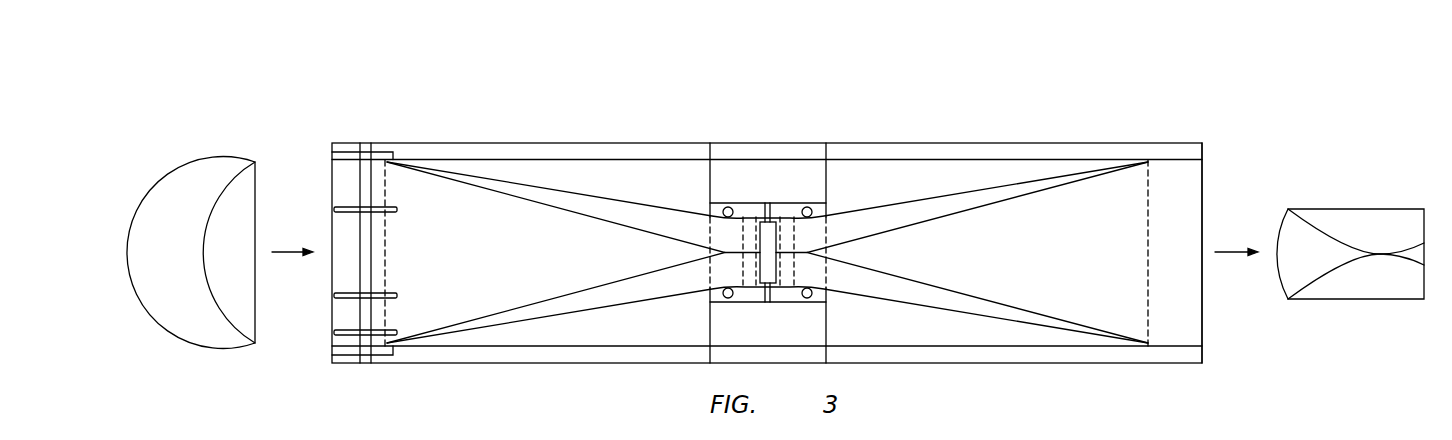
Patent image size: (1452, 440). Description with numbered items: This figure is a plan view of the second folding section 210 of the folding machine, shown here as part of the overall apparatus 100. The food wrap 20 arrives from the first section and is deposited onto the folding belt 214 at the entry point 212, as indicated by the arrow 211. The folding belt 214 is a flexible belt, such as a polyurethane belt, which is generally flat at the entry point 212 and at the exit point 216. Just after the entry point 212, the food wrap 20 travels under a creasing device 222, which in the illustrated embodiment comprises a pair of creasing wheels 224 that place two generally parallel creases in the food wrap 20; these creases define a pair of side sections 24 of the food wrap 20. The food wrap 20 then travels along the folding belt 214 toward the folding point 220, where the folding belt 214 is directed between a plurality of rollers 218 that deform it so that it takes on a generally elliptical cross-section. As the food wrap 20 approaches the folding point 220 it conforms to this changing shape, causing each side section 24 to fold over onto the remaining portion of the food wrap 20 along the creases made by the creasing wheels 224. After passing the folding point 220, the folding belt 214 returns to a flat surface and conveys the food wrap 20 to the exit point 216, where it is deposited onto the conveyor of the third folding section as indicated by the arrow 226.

The laser beam conditioning system 100 is at (548, 70).
The food wrap 20 is at (188, 266).
The side sections 24 is at (1352, 207).
The arrow 211 is at (299, 250).
The arrow 226 is at (1233, 248).
The entry point 212 is at (296, 358).
The exit point 216 is at (1238, 360).
The folding belt 214 is at (543, 264).
The second folding section 210 is at (793, 120).
The folding point 220 is at (733, 166).
The rollers 218 is at (804, 206).
The creasing device 222 is at (353, 124).
The creasing wheels 224 is at (397, 210).